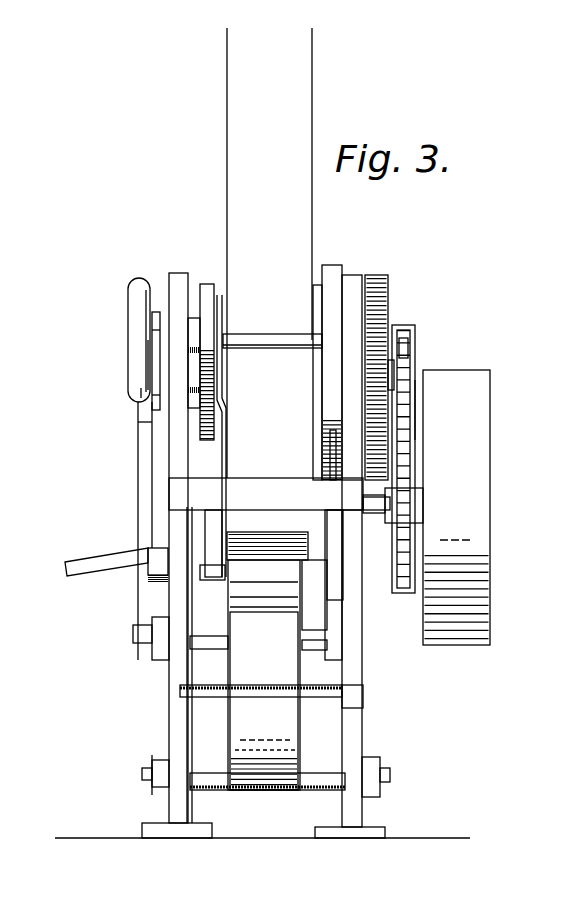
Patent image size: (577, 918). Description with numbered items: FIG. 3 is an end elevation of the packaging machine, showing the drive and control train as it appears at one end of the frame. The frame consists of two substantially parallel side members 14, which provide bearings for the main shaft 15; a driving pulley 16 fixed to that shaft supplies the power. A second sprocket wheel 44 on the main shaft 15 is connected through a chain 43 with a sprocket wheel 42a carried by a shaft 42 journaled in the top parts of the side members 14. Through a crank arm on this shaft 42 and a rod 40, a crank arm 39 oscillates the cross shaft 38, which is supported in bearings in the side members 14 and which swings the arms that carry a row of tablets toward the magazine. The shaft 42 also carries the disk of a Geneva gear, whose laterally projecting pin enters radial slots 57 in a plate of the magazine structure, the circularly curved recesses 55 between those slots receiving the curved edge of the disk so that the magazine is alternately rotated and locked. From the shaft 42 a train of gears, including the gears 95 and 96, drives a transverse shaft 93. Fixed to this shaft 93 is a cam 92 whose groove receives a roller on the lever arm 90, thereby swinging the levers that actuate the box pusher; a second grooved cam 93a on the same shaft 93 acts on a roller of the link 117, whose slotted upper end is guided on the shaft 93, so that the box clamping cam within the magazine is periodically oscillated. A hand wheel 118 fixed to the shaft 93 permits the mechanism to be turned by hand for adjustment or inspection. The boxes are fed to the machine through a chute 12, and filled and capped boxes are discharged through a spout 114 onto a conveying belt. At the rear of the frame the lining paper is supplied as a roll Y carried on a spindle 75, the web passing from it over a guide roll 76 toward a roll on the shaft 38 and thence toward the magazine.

The chute 12 is at (288, 212).
The side members 14 is at (178, 591).
The main shaft 15 is at (377, 515).
The driving pulley 16 is at (478, 492).
The cross shaft 38 is at (215, 640).
The crank arm 39 is at (162, 633).
The rod 40 is at (140, 450).
The shaft 42 is at (388, 367).
The sprocket wheel 42a is at (414, 348).
The chain 43 is at (413, 423).
The second sprocket wheel 44 is at (415, 450).
The circularly curved recesses 55 is at (335, 443).
The radial slots 57 is at (330, 600).
The spindle 75 is at (208, 692).
The guide roll 76 is at (320, 773).
The lever arm 90 is at (313, 290).
The cam 92 is at (332, 268).
The transverse shaft 93 is at (272, 335).
The cam 93a is at (214, 285).
The gear 95 is at (370, 462).
The gear 96 is at (388, 295).
The spout 114 is at (93, 562).
The link 117 is at (212, 442).
The hand wheel 118 is at (135, 305).
The roll Y is at (283, 722).